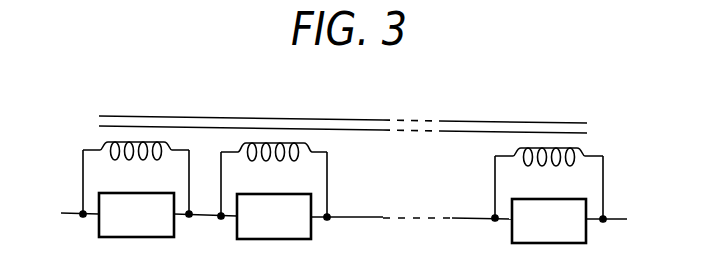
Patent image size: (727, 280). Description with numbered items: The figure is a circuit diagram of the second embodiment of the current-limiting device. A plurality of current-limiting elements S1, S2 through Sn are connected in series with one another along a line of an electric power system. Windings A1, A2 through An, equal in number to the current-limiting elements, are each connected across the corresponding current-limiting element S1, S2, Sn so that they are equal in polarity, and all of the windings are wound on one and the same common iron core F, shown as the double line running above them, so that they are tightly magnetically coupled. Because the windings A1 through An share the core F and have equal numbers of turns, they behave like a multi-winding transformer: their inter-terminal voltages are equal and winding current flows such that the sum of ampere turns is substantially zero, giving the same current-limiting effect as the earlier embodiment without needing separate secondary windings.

The common iron core F is at (343, 112).
The winding A1 is at (136, 178).
The winding A2 is at (274, 180).
The winding An is at (549, 183).
The current-limiting element S1 is at (136, 215).
The current-limiting element S2 is at (274, 216).
The current-limiting element Sn is at (549, 221).